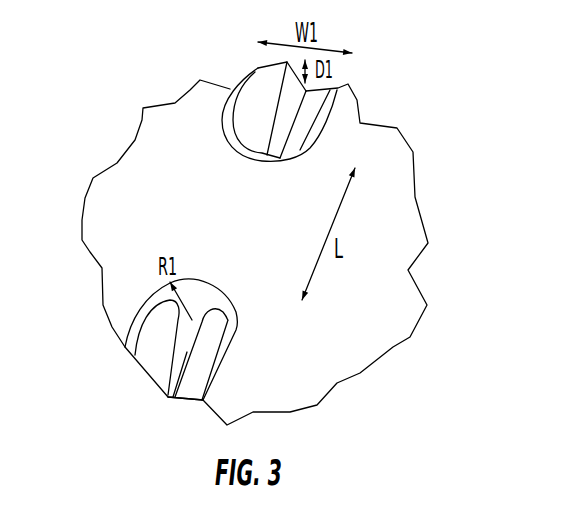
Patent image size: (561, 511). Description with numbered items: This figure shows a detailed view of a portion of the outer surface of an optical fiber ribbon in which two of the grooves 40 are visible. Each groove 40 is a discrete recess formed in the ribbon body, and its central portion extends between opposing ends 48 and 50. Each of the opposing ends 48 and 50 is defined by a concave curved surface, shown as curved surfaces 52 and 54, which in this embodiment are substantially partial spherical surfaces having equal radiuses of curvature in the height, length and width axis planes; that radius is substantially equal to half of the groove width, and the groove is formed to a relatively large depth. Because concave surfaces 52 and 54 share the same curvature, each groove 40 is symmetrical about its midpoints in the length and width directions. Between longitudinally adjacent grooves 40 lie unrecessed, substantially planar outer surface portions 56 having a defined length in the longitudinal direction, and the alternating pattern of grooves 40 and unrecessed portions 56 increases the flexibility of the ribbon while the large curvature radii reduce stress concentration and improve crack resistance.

The groove 40 is at (334, 91).
The opposing end 48 is at (170, 131).
The opposing end 50 is at (125, 312).
The concave curved surface 52 is at (270, 160).
The concave curved surface 54 is at (207, 295).
The unrecessed outer surface portion 56 is at (187, 187).